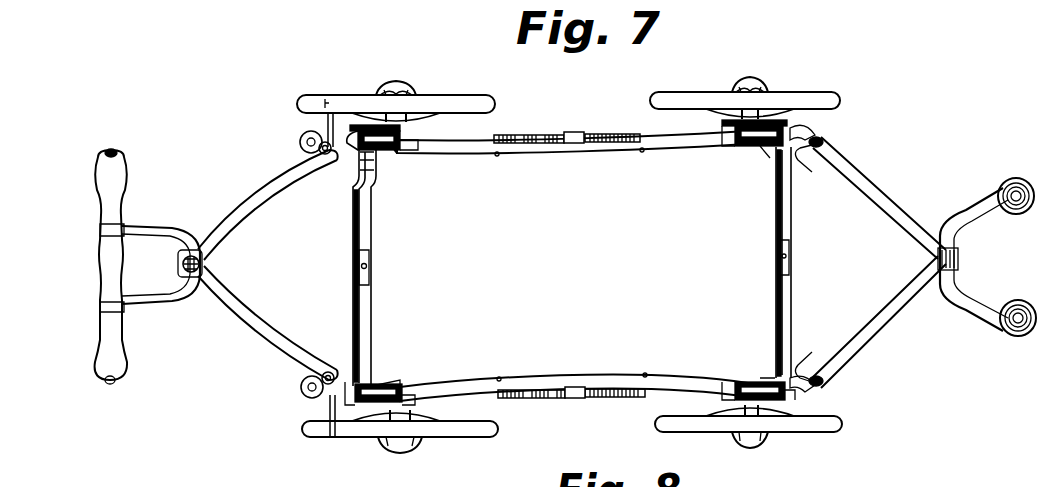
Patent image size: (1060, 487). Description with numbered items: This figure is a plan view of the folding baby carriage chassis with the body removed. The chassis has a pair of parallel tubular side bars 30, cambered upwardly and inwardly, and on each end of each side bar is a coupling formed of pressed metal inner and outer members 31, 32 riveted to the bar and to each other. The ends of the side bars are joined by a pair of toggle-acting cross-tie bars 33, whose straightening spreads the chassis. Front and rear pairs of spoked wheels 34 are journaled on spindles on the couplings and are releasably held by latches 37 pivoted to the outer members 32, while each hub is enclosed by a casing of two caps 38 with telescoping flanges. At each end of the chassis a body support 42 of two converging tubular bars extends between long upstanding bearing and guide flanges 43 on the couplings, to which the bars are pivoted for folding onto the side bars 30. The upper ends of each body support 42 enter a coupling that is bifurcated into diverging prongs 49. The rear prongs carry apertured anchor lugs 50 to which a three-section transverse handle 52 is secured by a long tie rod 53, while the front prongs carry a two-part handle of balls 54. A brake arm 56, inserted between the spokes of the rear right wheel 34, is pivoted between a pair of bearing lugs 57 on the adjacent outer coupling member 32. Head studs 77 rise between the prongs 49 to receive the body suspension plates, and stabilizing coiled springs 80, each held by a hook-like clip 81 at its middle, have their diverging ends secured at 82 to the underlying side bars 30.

The side bar 30 is at (596, 148).
The inner coupling member 31 is at (762, 147).
The outer coupling member 32 is at (800, 140).
The cross-tie bar 33 is at (372, 275).
The wheel 34 is at (478, 96).
The latch 37 is at (420, 130).
The cap 38 is at (400, 82).
The body support 42 is at (250, 208).
The bearing and guide flange 43 is at (805, 162).
The prong 49 is at (152, 234).
The anchor lug 50 is at (100, 233).
The handle 52 is at (110, 200).
The tie rod 53 is at (116, 153).
The ball 54 is at (1010, 180).
The brake arm 56 is at (302, 395).
The bearing lug 57 is at (823, 144).
The head stud 77 is at (180, 266).
The stabilizing spring 80 is at (603, 133).
The clip 81 is at (572, 132).
The spring end securement 82 is at (497, 135).